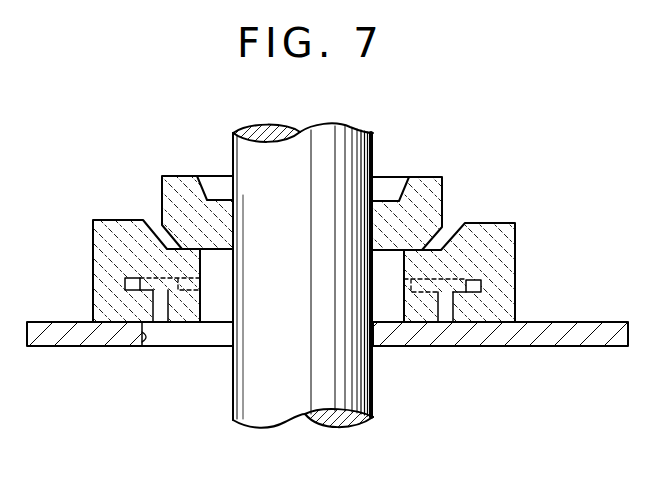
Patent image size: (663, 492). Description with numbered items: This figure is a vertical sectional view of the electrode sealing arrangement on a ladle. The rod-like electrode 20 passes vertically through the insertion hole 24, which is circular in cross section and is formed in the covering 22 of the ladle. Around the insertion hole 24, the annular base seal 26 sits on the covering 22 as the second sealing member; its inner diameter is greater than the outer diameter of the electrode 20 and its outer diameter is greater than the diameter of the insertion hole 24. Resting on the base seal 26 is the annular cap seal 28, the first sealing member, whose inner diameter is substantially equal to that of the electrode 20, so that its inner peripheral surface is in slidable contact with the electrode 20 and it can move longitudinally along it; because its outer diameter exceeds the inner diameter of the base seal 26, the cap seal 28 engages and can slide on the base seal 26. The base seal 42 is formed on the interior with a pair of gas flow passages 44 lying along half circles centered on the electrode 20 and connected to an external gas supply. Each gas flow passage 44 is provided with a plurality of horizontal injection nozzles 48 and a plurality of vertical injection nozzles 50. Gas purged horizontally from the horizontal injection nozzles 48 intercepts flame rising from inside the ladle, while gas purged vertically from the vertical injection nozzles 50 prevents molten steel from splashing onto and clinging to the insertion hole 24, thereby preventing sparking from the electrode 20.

The electrode 20 is at (280, 415).
The covering 22 is at (570, 343).
The insertion hole 24 is at (140, 331).
The base seal 26 is at (516, 247).
The cap seal 28 is at (178, 188).
The base seal 42 is at (79, 249).
The gas flow passages 44 is at (130, 275).
The horizontal injection nozzles 48 is at (183, 305).
The vertical injection nozzles 50 is at (157, 308).